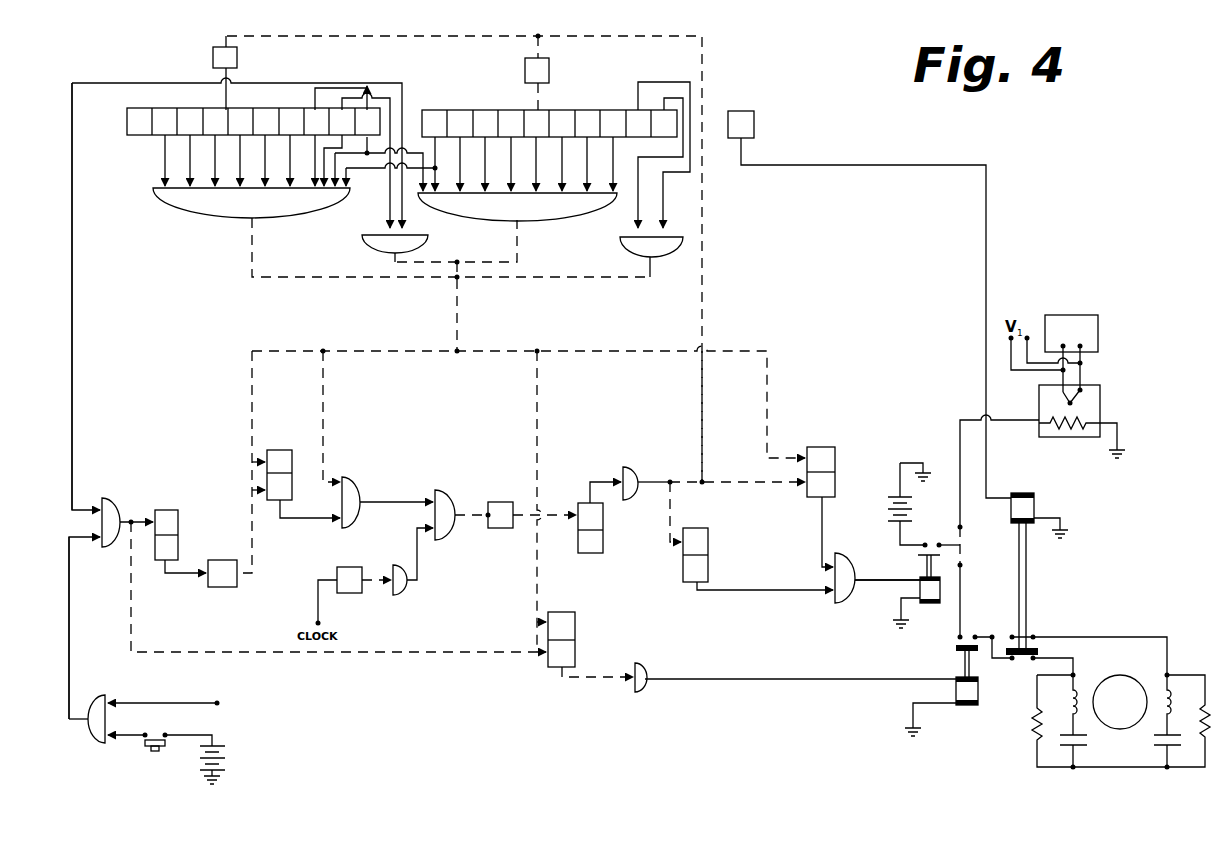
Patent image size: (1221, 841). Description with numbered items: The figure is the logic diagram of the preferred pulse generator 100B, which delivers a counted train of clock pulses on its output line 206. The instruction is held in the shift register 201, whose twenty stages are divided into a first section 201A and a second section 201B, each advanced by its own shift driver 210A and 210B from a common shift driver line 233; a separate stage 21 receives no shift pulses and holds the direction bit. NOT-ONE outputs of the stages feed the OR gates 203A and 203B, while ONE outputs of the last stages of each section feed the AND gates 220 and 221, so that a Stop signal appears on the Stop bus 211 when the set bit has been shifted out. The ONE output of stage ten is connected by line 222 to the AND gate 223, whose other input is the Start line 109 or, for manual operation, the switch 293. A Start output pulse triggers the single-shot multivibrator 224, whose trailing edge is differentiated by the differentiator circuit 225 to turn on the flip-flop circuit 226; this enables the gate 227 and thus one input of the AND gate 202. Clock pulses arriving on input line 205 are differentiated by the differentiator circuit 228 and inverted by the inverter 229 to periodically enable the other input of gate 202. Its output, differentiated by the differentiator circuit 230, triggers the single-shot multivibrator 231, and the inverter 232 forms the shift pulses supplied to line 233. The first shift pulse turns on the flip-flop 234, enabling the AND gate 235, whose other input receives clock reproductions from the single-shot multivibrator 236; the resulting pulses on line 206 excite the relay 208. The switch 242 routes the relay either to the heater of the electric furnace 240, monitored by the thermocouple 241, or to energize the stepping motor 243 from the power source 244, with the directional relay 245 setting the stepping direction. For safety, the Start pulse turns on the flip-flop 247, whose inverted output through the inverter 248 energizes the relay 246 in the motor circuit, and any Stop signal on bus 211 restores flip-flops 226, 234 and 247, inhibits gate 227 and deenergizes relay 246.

The pulse generator 100B is at (800, 71).
The shift driver 210A is at (237, 57).
The first section of the shift register 201A is at (178, 108).
The shift register 201 is at (455, 87).
The shift driver 210B is at (549, 64).
The second section of the shift register 201B is at (554, 110).
The OR gate 203A is at (270, 217).
The OR gate 203B is at (530, 221).
The AND gate 220 is at (427, 247).
The AND gate 221 is at (655, 259).
The Stop bus 211 is at (457, 305).
The shift driver line 233 is at (702, 380).
The stage #21 of the shift register 21 is at (741, 124).
The input line of AND gate 223 222 is at (72, 310).
The Start line 109 is at (69, 615).
The AND gate 223 is at (108, 497).
The single-shot multivibrator 224 is at (172, 510).
The differentiator circuit 225 is at (221, 587).
The flip-flop circuit 226 is at (280, 450).
The gate 227 is at (356, 526).
The differentiator circuit 228 is at (341, 593).
The input line 205 is at (318, 622).
The inverter 229 is at (407, 569).
The AND gate 202 is at (443, 490).
The differentiator circuit 230 is at (501, 502).
The single-shot multivibrator 231 is at (578, 553).
The inverter 232 is at (633, 465).
The flip-flop 234 is at (822, 447).
The single-shot multivibrator 236 is at (708, 541).
The AND gate 235 is at (836, 601).
The output line 206 is at (900, 582).
The relay 208 is at (921, 604).
The power source 244 is at (893, 514).
The switch 242 is at (962, 553).
The thermocouple 241 is at (1082, 396).
The electric furnace 240 is at (1100, 403).
The directional relay 245 is at (1034, 508).
The relay 246 is at (983, 719).
The stepping motor 243 is at (1140, 756).
The flip-flop 247 is at (575, 621).
The inverter 248 is at (634, 692).
The switch 293 is at (136, 744).